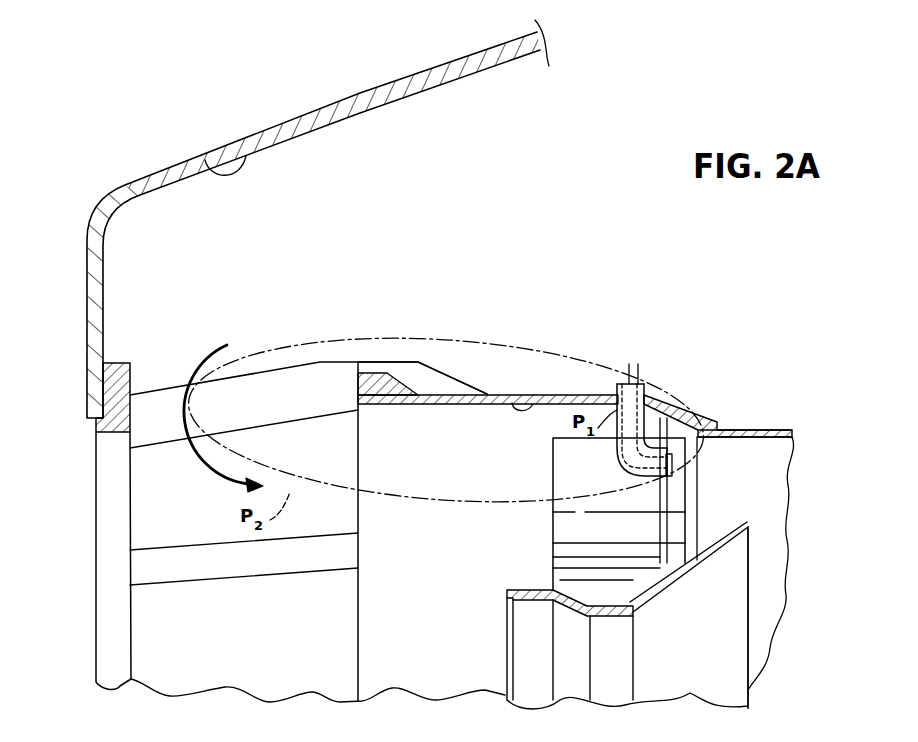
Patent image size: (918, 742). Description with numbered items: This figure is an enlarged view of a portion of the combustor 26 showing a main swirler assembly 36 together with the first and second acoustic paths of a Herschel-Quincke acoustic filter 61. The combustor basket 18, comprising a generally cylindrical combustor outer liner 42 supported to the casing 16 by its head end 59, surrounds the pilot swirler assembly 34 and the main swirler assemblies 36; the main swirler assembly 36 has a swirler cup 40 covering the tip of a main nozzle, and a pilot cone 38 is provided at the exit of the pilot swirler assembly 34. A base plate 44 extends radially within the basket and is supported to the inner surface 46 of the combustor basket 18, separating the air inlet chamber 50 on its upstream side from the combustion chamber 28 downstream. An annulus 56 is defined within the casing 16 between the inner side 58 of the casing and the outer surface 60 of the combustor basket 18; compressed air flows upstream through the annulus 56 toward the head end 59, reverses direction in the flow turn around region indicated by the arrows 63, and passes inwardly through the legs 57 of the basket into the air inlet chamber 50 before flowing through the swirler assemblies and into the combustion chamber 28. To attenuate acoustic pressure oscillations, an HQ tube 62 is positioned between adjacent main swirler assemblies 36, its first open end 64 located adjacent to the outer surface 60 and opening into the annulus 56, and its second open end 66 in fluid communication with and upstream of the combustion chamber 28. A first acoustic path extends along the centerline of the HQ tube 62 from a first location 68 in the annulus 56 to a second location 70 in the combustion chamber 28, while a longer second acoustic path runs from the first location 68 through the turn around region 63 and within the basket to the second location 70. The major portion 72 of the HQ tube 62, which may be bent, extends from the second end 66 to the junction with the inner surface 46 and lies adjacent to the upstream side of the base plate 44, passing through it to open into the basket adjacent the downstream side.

The casing 16 is at (298, 106).
The annulus 56 is at (293, 148).
The inner side of the casing 58 is at (205, 160).
The legs of the combustor basket 57 is at (161, 396).
The combustor 26 is at (90, 530).
The air inlet chamber 50 is at (372, 660).
The head end 59 is at (378, 378).
The outer surface of the combustor basket 60 is at (418, 372).
The combustor outer liner 42 is at (547, 392).
The inner surface of the combustor basket 46 is at (512, 403).
The combustor basket 18 is at (298, 358).
The flow turn around region 63 is at (212, 372).
The first open end of the HQ tube 64 is at (638, 366).
The first location 68 is at (630, 368).
The major portion of the HQ tube 72 is at (617, 432).
The Herschel-Quincke acoustic filter 61 is at (656, 368).
The HQ tube 62 is at (645, 414).
The swirler cup 40 is at (720, 432).
The combustion chamber 28 is at (767, 452).
The second location 70 is at (698, 465).
The second open end of the HQ tube 66 is at (673, 466).
The main swirler assembly 36 is at (562, 525).
The pilot swirler assembly 34 is at (498, 663).
The base plate 44 is at (680, 552).
The pilot cone 38 is at (748, 636).